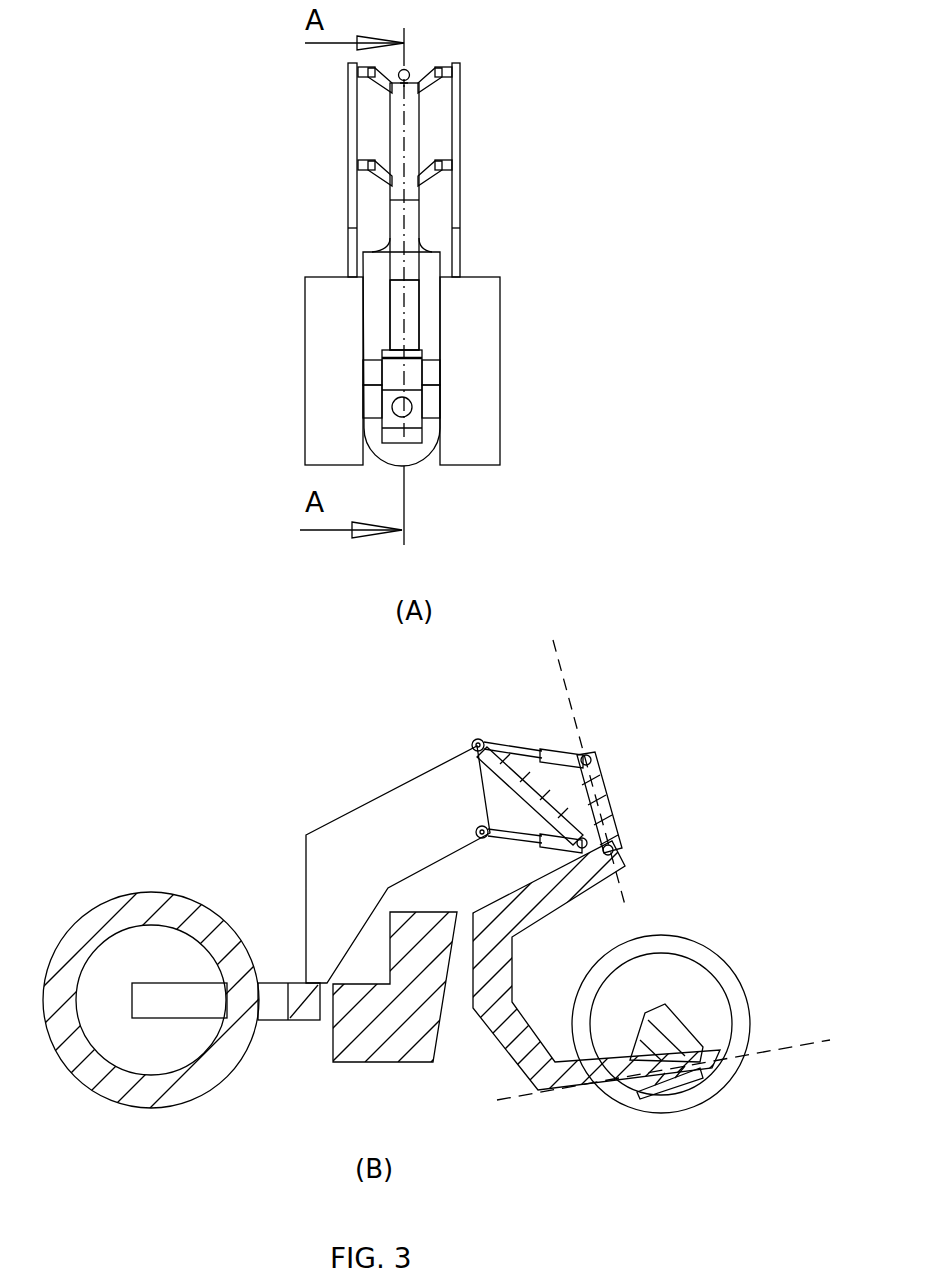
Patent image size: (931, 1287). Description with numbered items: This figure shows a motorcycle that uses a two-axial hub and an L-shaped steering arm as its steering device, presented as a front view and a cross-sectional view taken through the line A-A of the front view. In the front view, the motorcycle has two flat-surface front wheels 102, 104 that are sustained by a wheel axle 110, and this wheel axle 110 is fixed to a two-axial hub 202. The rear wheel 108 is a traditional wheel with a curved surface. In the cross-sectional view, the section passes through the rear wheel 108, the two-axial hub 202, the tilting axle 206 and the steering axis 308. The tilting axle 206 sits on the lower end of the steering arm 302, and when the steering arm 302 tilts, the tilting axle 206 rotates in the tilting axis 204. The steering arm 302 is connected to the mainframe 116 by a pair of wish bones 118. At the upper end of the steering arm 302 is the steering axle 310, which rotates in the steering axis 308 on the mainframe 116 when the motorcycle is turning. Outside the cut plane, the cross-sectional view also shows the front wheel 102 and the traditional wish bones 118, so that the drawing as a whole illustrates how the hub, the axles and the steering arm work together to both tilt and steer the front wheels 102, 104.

The flat surface front wheel 102 is at (497, 278).
The flat surface front wheel 104 is at (320, 295).
The rear wheel 108 is at (423, 240).
The wheel axle 110 is at (362, 363).
The mainframe 116 is at (410, 147).
The wish bones 118 is at (423, 72).
The 2-axial hub 202 is at (405, 387).
The tilting axis 204 is at (800, 1037).
The tilting axle 206 is at (397, 407).
The steering arm 302 is at (403, 328).
The steering axis 308 is at (557, 655).
The steering axle 310 is at (608, 802).